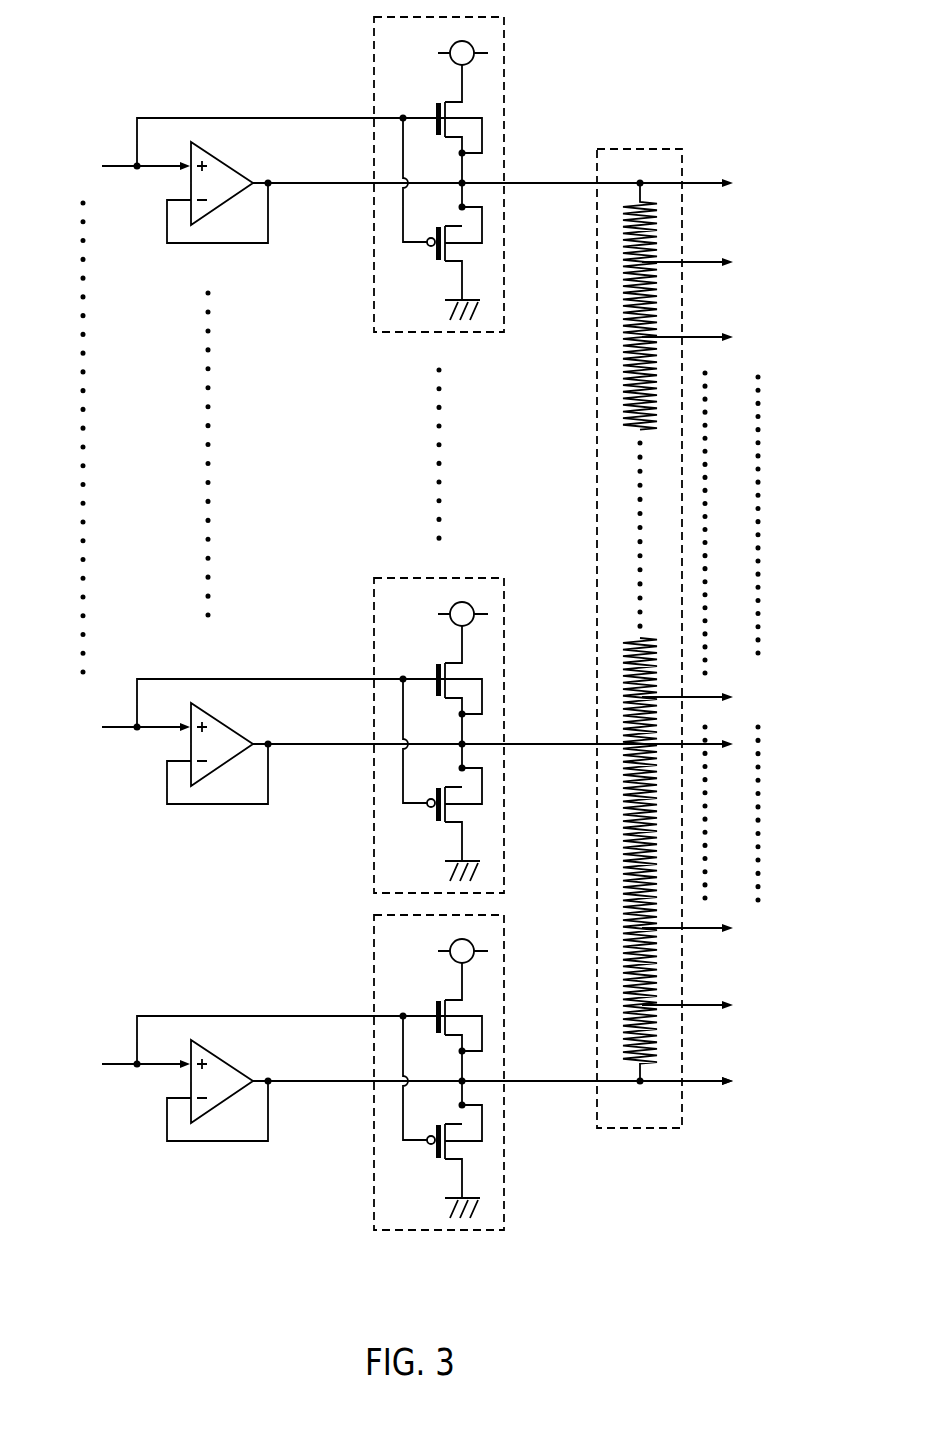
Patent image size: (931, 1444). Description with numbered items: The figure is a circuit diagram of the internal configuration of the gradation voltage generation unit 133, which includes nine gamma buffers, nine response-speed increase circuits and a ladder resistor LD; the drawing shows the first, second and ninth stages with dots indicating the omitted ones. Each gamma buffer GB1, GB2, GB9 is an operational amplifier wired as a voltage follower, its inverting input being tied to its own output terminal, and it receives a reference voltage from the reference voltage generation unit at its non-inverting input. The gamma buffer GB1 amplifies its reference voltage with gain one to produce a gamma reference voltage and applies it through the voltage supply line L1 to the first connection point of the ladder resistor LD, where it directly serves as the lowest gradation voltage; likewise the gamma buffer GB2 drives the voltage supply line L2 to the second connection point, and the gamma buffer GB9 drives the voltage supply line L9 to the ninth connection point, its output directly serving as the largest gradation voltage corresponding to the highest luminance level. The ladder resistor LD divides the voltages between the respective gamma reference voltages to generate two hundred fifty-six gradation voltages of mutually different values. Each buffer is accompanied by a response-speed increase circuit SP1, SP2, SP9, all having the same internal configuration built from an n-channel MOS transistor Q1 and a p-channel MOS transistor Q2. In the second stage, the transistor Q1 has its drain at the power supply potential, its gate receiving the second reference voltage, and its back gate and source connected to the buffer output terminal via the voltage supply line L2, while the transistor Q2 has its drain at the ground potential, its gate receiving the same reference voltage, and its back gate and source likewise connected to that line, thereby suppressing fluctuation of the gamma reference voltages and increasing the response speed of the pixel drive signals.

The gradation voltage generation unit 133 is at (731, 62).
The response-speed increase circuit SP9 is at (504, 60).
The response-speed increase circuit SP2 is at (471, 735).
The response-speed increase circuit SP1 is at (471, 1072).
The n-channel MOS transistor Q1 is at (436, 104).
The p-channel MOS transistor Q2 is at (436, 258).
The gamma buffer GB9 is at (227, 180).
The gamma buffer GB2 is at (230, 741).
The gamma buffer GB1 is at (230, 1078).
The voltage supply line L9 is at (557, 183).
The voltage supply line L2 is at (500, 720).
The voltage supply line L1 is at (500, 1057).
The ladder resistor LD is at (650, 149).